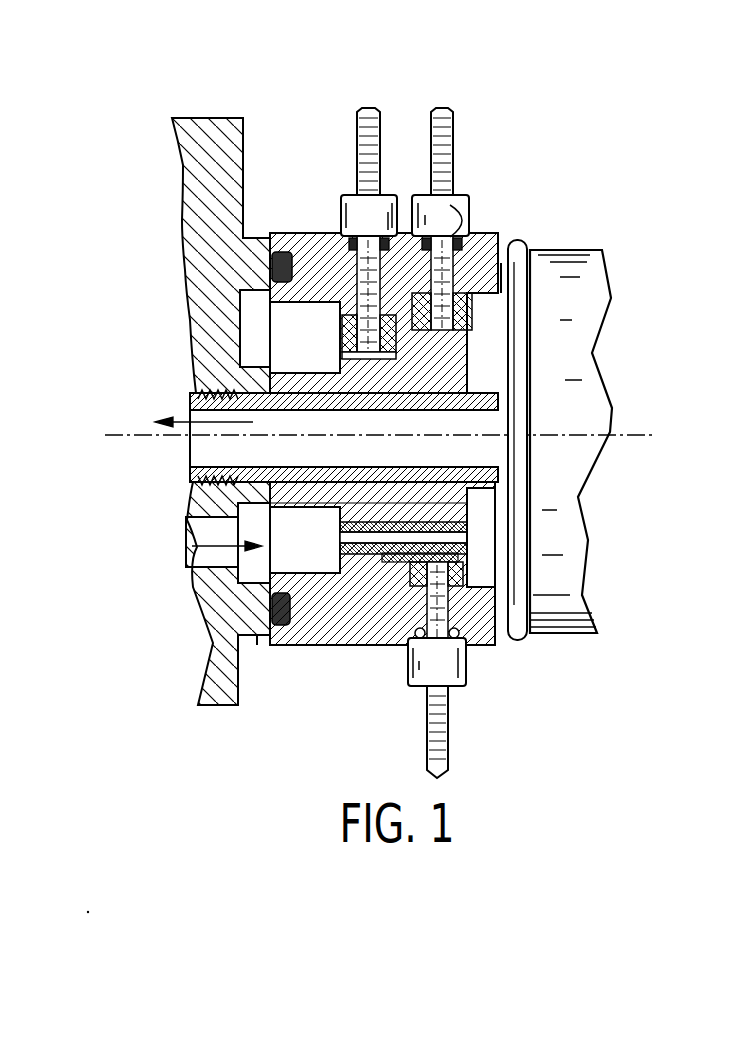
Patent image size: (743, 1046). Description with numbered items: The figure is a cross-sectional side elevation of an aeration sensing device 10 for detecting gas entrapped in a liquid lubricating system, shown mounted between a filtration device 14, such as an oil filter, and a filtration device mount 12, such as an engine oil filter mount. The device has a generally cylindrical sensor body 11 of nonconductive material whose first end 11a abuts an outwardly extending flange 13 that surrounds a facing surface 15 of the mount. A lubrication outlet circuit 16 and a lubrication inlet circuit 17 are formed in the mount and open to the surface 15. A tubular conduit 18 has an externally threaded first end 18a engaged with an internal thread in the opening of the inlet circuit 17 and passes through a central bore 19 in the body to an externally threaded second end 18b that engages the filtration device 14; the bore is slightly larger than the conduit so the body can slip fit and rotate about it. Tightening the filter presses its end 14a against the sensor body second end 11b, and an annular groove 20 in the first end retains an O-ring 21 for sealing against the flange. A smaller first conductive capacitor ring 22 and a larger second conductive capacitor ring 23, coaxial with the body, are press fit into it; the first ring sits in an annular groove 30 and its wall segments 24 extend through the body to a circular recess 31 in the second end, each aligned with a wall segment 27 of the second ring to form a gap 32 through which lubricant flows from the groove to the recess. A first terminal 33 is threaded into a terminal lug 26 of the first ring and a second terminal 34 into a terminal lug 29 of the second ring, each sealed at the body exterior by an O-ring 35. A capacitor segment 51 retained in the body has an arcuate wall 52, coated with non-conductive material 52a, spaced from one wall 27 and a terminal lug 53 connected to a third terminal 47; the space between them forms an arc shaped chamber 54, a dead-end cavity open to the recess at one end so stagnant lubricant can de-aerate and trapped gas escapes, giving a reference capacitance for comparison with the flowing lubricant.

The aeration sensing device 10 is at (482, 78).
The sensor body 11 is at (327, 233).
The first end 11a is at (254, 233).
The second end 11b is at (500, 234).
The filtration device mount 12 is at (216, 706).
The flange 13 is at (253, 638).
The filtration device 14 is at (573, 250).
The end of the filtration device 14a is at (497, 317).
The facing surface 15 is at (240, 302).
The lubrication outlet circuit 16 is at (218, 525).
The lubrication inlet circuit 17 is at (200, 396).
The tubular conduit 18 is at (210, 447).
The first end 18a is at (208, 490).
The second end 18b is at (494, 396).
The central bore 19 is at (350, 395).
The annular groove 20 is at (270, 255).
The O-ring 21 is at (270, 266).
The first conductive capacitor ring 22 is at (333, 526).
The second conductive capacitor ring 23 is at (480, 551).
The wall segments 24 is at (470, 532).
The terminal lug 26 is at (342, 326).
The wall segments 27 is at (342, 538).
The terminal lug 29 is at (498, 335).
The annular groove 30 is at (270, 366).
The circular recess 31 is at (470, 357).
The gap 32 is at (400, 530).
The first terminal 33 is at (362, 110).
The second terminal 34 is at (455, 128).
The O-ring 35 is at (326, 246).
The third terminal 47 is at (446, 745).
The capacitor segment 51 is at (478, 565).
The arcuate wall 52 is at (412, 556).
The non-conductive material 52a is at (470, 478).
The terminal lug 53 is at (470, 568).
The arc shaped chamber 54 is at (424, 562).